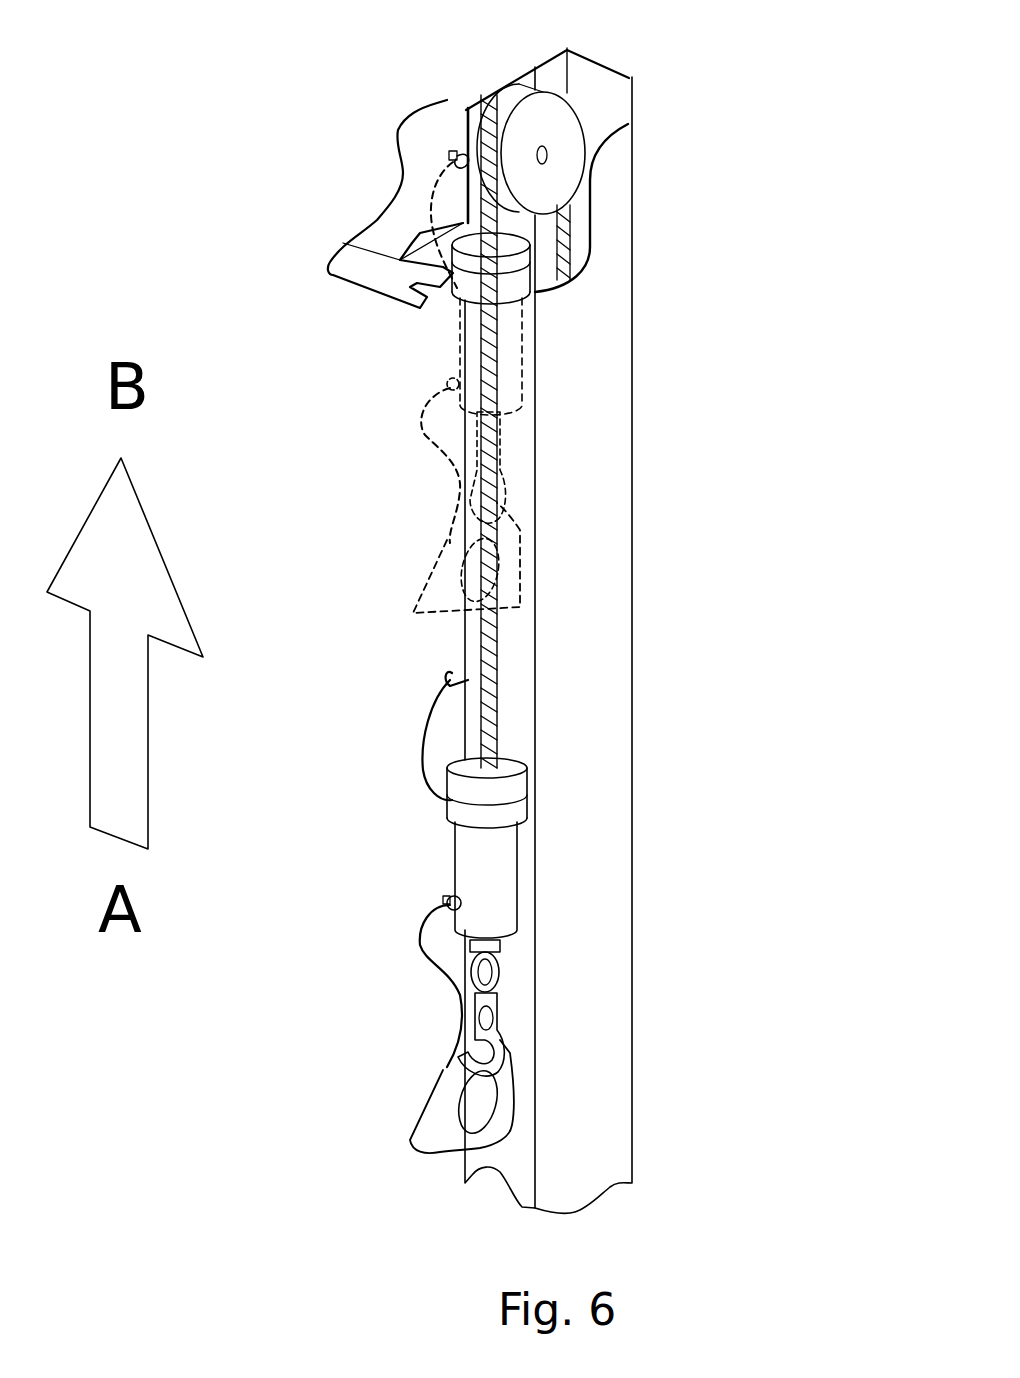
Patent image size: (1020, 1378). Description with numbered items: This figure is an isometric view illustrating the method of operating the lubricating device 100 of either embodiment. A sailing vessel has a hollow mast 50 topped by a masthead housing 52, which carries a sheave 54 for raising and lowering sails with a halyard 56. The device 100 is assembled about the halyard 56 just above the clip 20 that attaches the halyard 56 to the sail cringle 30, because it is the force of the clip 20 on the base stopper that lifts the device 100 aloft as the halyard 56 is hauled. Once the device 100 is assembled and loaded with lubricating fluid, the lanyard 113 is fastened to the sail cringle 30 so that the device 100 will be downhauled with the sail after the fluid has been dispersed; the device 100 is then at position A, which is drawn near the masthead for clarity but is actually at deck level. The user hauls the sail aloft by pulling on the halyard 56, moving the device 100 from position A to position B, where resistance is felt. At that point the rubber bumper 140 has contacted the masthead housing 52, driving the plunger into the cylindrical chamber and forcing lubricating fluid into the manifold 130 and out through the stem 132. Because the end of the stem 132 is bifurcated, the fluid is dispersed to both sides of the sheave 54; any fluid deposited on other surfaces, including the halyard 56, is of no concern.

The clip 20 is at (478, 1010).
The sail cringle 30 is at (427, 1133).
The hollow mast 50 is at (610, 1000).
The masthead housing 52 is at (383, 232).
The sheave 54 is at (563, 133).
The halyard 56 is at (560, 240).
The device 100 is at (536, 848).
The lanyard 113 is at (417, 947).
The manifold 130 is at (517, 813).
The stem 132 is at (465, 155).
The rubber bumper 140 is at (517, 263).